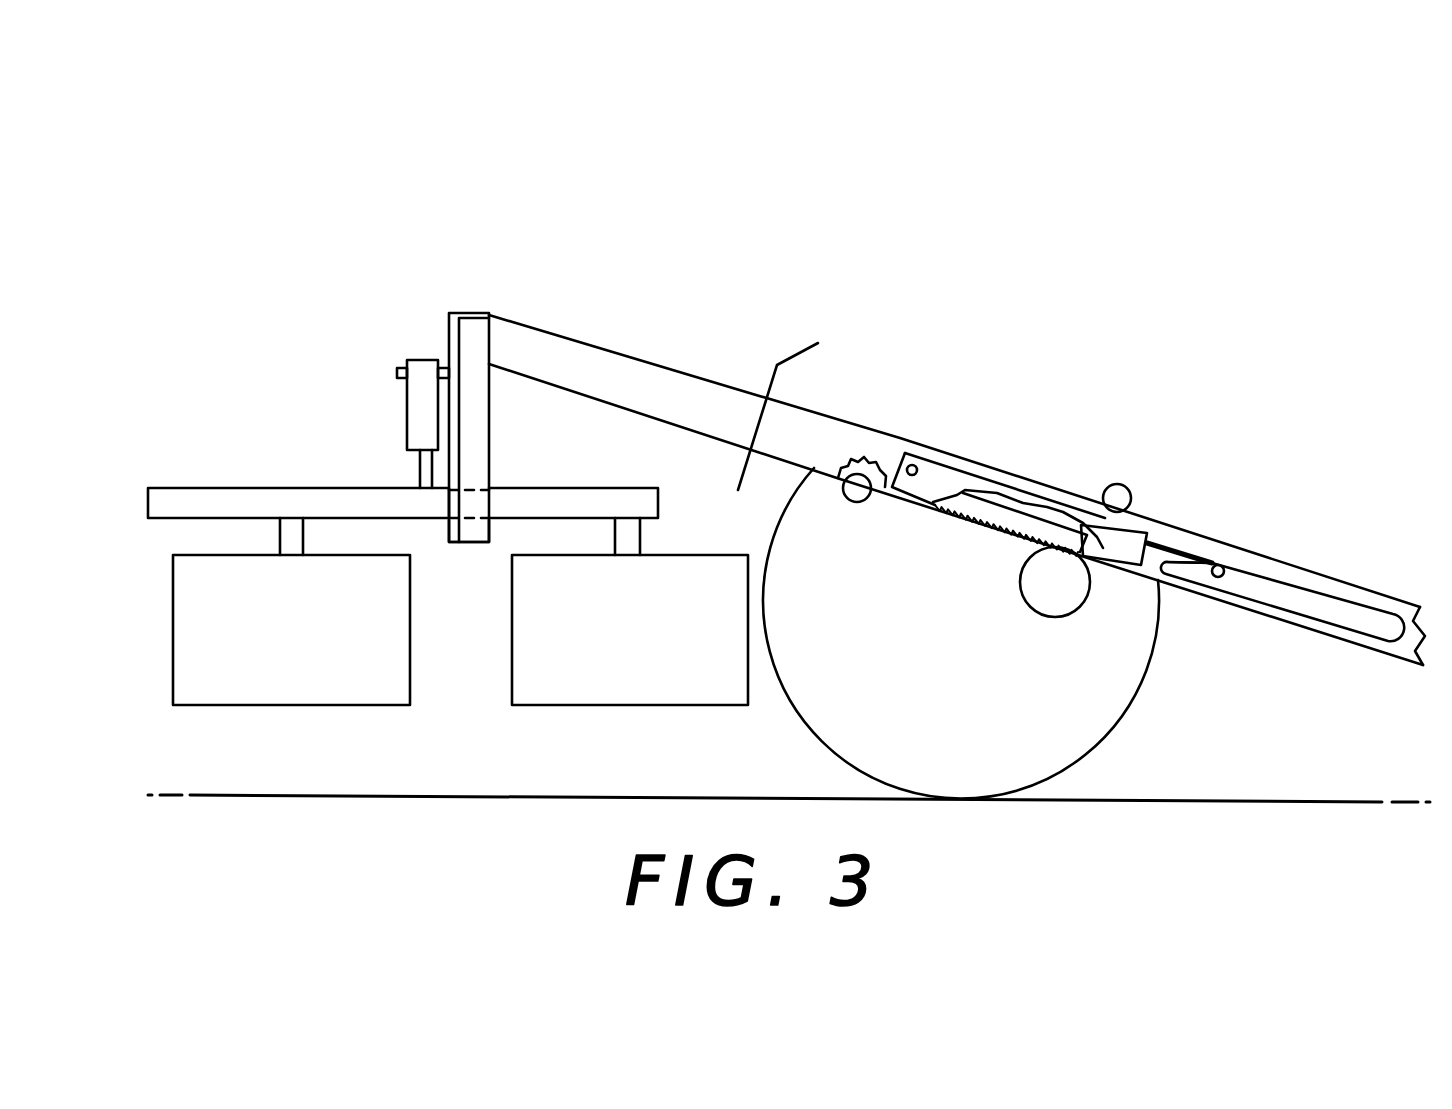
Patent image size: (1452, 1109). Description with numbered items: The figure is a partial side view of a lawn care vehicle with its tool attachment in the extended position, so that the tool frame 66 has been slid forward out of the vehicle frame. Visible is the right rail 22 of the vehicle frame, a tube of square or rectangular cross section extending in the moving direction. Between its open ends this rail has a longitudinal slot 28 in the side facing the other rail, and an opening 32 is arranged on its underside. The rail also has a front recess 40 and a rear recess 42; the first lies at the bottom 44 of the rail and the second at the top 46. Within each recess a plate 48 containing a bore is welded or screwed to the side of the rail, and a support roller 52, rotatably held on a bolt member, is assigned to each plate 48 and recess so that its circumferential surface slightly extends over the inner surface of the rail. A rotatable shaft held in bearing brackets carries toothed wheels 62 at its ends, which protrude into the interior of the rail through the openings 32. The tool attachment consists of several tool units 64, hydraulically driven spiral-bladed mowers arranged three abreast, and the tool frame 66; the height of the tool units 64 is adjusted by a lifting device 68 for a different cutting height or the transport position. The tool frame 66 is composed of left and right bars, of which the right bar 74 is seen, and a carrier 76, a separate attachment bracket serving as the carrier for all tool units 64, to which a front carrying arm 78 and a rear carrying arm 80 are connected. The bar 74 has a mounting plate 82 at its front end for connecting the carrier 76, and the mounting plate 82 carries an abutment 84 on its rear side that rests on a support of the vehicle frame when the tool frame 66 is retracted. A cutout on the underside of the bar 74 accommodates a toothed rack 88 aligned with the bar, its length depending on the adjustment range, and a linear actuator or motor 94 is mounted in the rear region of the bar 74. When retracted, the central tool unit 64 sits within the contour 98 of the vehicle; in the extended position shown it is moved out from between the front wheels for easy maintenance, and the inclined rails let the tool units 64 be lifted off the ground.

The right rail 22 is at (1406, 665).
The longitudinal slot 28 is at (1308, 603).
The opening 32 is at (1103, 548).
The front recess 40 is at (846, 466).
The rear recess 42 is at (1137, 508).
The bottom of rail 44 is at (1240, 607).
The top of rail 46 is at (1233, 546).
The plate 48 is at (802, 348).
The support roller 52 is at (856, 503).
The wheel 62 is at (1060, 618).
The tool unit 64 is at (318, 657).
The tool frame 66 is at (650, 302).
The lifting device 68 is at (409, 340).
The right bar 74 is at (723, 398).
The carrier 76 is at (469, 590).
The front carrying arm 78 is at (248, 487).
The rear carrying arm 80 is at (563, 487).
The mounting plate 82 is at (481, 346).
The abutment 84 is at (466, 312).
The toothed rack 88 is at (990, 526).
The linear actuator or motor 94 is at (936, 470).
The contour 98 is at (772, 481).